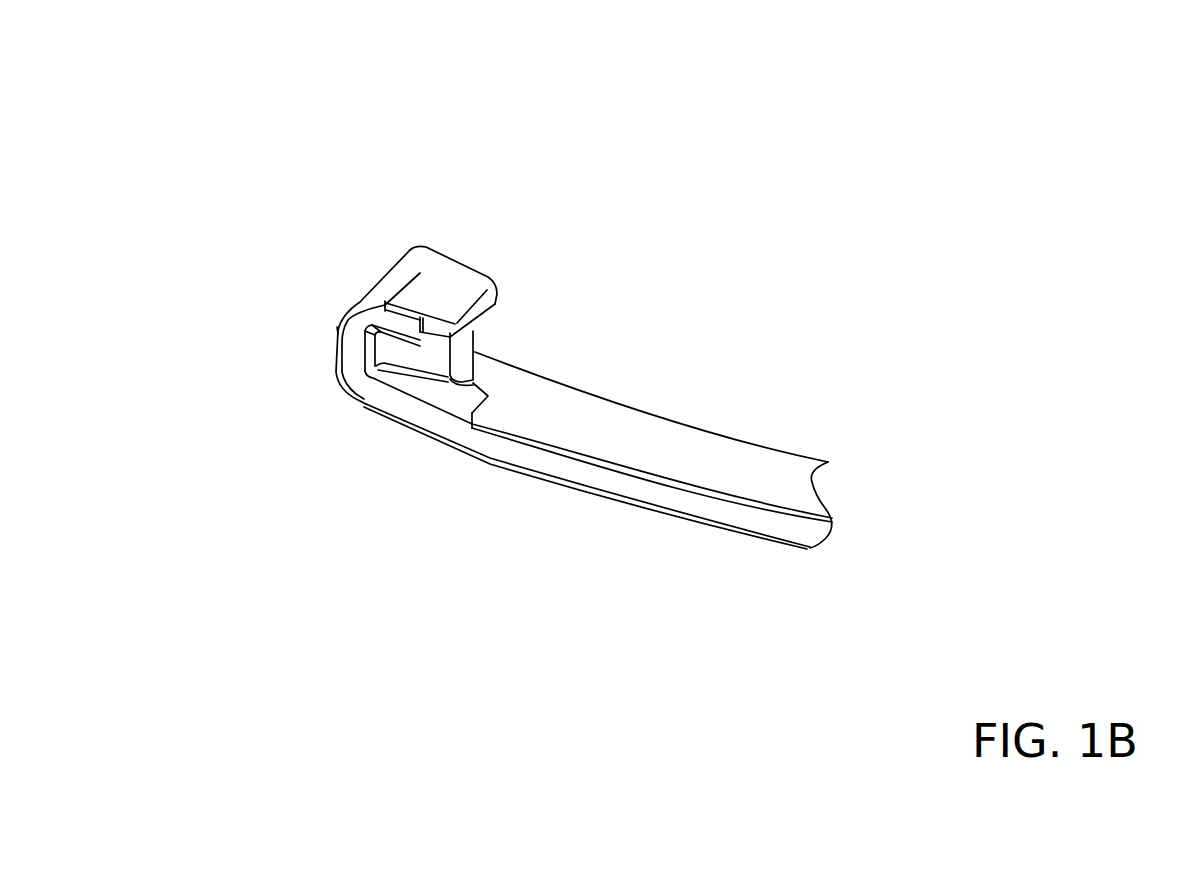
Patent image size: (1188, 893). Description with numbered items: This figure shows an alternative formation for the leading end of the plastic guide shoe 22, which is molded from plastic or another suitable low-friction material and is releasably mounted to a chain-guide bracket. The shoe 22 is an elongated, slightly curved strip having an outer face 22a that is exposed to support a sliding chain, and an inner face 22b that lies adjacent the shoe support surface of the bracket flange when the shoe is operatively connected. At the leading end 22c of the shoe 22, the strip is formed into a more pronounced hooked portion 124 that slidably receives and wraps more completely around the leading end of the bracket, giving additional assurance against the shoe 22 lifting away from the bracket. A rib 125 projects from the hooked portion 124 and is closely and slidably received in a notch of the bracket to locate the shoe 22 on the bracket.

The guide shoe 22 is at (803, 422).
The outer face 22a is at (767, 543).
The inner face 22b is at (640, 435).
The leading end 22c is at (332, 397).
The hooked portion 124 is at (455, 270).
The rib 125 is at (465, 352).